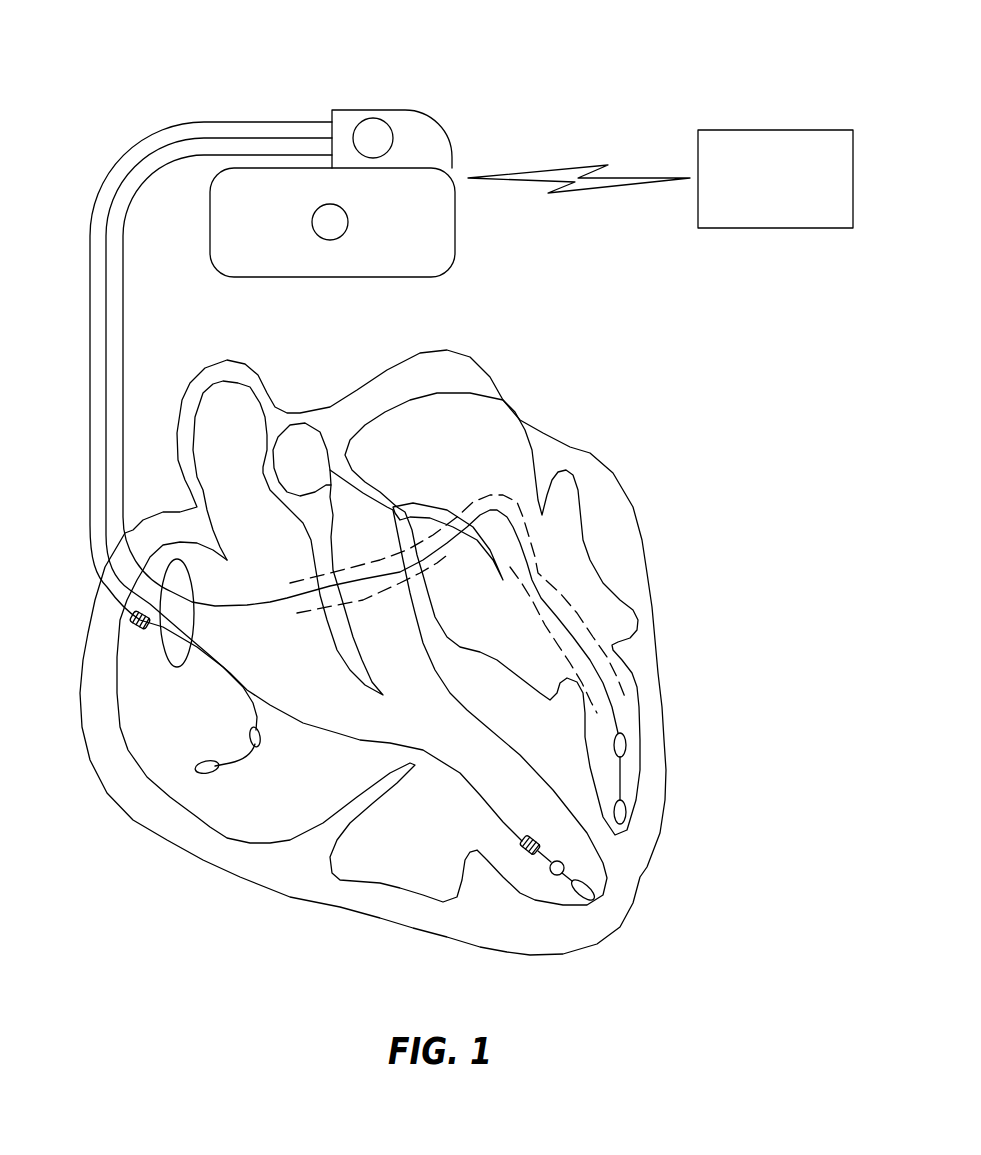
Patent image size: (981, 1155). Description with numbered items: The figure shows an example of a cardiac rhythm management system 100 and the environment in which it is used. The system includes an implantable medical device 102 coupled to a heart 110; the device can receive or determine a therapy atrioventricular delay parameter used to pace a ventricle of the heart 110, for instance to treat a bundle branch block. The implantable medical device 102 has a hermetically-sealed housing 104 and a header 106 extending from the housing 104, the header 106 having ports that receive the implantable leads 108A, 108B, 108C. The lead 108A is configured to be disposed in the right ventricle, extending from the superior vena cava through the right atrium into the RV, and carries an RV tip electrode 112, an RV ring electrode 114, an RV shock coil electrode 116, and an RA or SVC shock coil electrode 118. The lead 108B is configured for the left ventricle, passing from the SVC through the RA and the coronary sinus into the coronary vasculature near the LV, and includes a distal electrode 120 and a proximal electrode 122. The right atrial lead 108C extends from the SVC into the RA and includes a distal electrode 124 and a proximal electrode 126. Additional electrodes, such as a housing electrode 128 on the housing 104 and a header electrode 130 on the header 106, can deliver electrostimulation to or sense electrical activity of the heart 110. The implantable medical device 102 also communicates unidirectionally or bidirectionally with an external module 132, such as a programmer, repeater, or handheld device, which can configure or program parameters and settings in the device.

The cardiac rhythm management system 100 is at (103, 38).
The implantable medical device 102 is at (214, 231).
The housing 104 is at (458, 220).
The header 106 is at (435, 140).
The lead 108A is at (90, 258).
The lead 108B is at (106, 312).
The lead 108C is at (124, 345).
The heart 110 is at (620, 488).
The RV tip electrode 112 is at (600, 880).
The RV ring electrode 114 is at (547, 882).
The RV shock coil electrode 116 is at (540, 838).
The RA or SVC shock coil electrode 118 is at (135, 625).
The distal electrode 120 is at (632, 818).
The proximal electrode 122 is at (630, 745).
The distal electrode 124 is at (205, 762).
The proximal electrode 126 is at (260, 743).
The housing electrode 128 is at (350, 222).
The header electrode 130 is at (380, 118).
The external module 132 is at (775, 130).